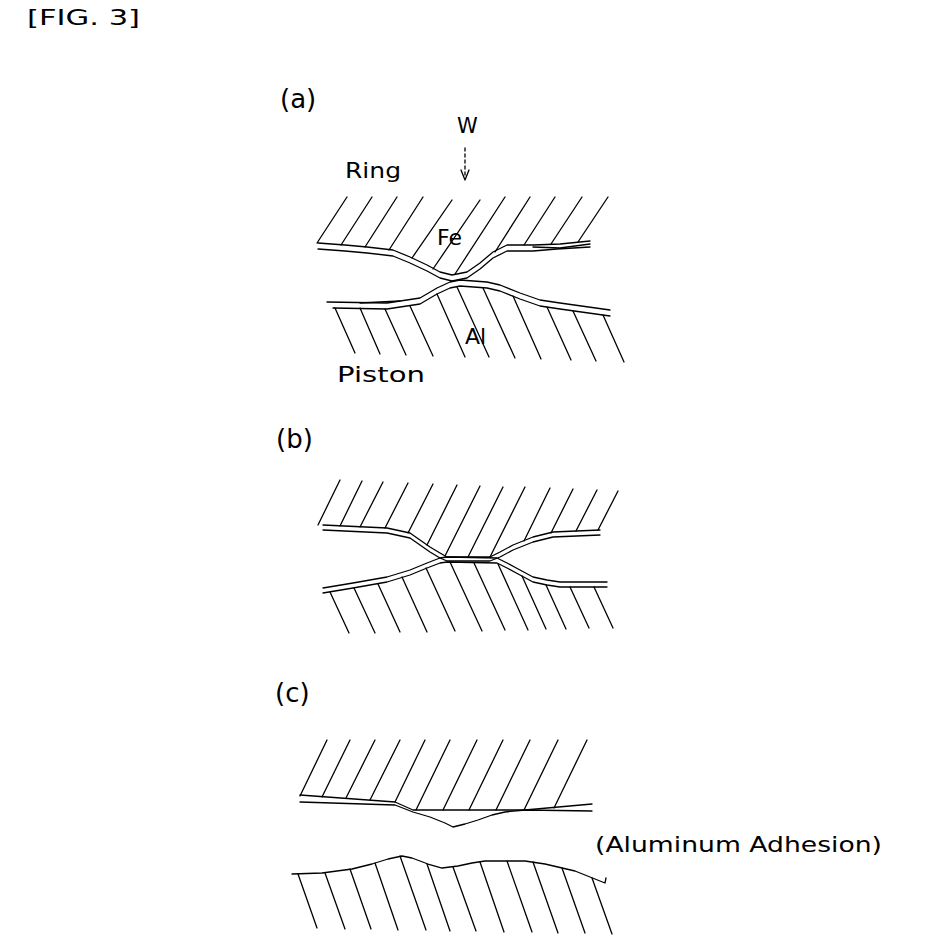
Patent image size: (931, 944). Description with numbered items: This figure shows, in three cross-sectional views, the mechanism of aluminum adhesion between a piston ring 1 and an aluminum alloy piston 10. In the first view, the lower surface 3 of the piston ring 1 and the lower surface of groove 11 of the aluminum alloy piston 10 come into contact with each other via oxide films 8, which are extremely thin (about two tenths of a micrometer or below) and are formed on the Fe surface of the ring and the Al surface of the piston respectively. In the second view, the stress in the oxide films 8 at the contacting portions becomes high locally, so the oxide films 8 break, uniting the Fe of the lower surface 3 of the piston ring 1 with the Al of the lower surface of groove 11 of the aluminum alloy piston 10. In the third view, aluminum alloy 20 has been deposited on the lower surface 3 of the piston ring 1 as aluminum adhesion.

The piston ring 1 is at (585, 222).
The lower surface of the piston ring 3 is at (535, 254).
The oxide film 8 is at (318, 246).
The aluminum alloy piston 10 is at (608, 352).
The lower surface of groove 11 is at (380, 303).
The aluminum alloy 20 is at (425, 815).